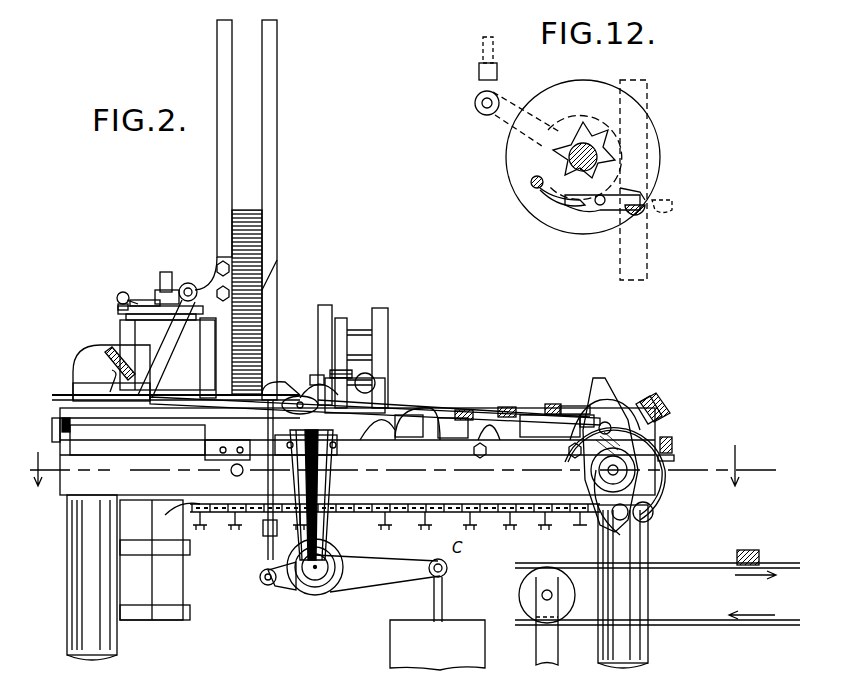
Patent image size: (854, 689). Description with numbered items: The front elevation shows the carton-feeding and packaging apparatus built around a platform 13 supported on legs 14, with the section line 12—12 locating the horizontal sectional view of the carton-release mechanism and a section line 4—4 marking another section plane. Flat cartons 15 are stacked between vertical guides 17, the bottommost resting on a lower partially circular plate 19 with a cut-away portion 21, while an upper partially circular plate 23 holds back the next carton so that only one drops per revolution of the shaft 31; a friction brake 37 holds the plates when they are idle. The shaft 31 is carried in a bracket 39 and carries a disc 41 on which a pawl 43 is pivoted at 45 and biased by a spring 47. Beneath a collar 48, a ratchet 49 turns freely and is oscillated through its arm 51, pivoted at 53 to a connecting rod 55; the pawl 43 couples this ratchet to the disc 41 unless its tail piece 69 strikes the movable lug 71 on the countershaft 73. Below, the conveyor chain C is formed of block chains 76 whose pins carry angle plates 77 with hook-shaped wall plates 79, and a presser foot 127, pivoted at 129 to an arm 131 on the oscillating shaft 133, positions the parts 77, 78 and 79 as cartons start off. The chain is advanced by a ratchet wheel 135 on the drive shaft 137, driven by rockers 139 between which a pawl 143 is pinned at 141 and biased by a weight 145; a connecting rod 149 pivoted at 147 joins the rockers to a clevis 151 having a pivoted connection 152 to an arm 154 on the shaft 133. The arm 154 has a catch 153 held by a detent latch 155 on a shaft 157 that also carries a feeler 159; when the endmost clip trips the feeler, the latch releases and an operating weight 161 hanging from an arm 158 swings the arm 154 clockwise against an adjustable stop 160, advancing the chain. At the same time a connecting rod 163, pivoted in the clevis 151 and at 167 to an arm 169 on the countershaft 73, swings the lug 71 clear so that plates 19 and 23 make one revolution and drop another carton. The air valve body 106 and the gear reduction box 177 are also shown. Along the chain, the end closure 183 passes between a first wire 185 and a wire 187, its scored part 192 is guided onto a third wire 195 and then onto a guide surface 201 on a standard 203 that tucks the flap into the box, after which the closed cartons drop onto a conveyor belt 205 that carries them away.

In FIG. 2, the section line 4- 4 is at (399, 465).
In FIG. 2, the section line 12— 12 is at (180, 300).
In FIG. 2, the platform 13 is at (62, 438).
In FIG. 2, the legs 14 is at (105, 640).
In FIG. 2, the cartons 15 is at (240, 232).
In FIG. 2, the vertical guides 17 is at (265, 153).
In FIG. 2, the lower partially circular plate 19 is at (107, 375).
In FIG. 2, the cut-away portion 21 is at (70, 398).
In FIG. 2, the upper partially circular plate 23 is at (70, 393).
In FIG. 2, the shaft 31 is at (164, 272).
In FIG. 12, the shaft 31 is at (584, 142).
In FIG. 2, the friction brake 37 is at (84, 382).
In FIG. 2, the bracket 39 is at (88, 352).
In FIG. 2, the disc 41 is at (159, 319).
In FIG. 12, the disc 41 is at (512, 162).
In FIG. 2, the pawl 43 is at (170, 316).
In FIG. 12, the pawl 43 is at (590, 205).
In FIG. 12, the pivot 45 is at (603, 208).
In FIG. 2, the spring 47 is at (146, 300).
In FIG. 12, the spring 47 is at (555, 190).
In FIG. 2, the collar 48 is at (157, 292).
In FIG. 12, the ratchet 49 is at (570, 135).
In FIG. 2, the arm 51 is at (118, 295).
In FIG. 12, the arm 51 is at (498, 125).
In FIG. 2, the pivot 53 is at (123, 292).
In FIG. 12, the pivot 53 is at (475, 103).
In FIG. 12, the connecting rod 55 is at (480, 53).
In FIG. 12, the tail piece 69 is at (640, 190).
In FIG. 12, the movable lug 71 is at (675, 200).
In FIG. 2, the countershaft 73 is at (188, 283).
In FIG. 12, the countershaft 73 is at (645, 265).
In FIG. 2, the block chains 76 is at (650, 486).
In FIG. 2, the angle plates 77 is at (238, 530).
In FIG. 2, the plate part 78 is at (210, 532).
In FIG. 2, the hook-shaped wall plates 79 is at (230, 520).
In FIG. 2, the valve body 106 is at (98, 428).
In FIG. 2, the presser foot 127 is at (270, 283).
In FIG. 2, the pivot 129 is at (262, 585).
In FIG. 2, the arm 131 is at (284, 590).
In FIG. 2, the oscillating shaft 133 is at (318, 580).
In FIG. 2, the ratchet wheel 135 is at (664, 412).
In FIG. 2, the drive shaft 137 is at (592, 474).
In FIG. 2, the rockers 139 is at (601, 398).
In FIG. 2, the pin 141 is at (630, 525).
In FIG. 2, the pawl 143 is at (600, 522).
In FIG. 2, the weight 145 is at (653, 514).
In FIG. 2, the pivot 147 is at (612, 420).
In FIG. 2, the connecting rod 149 is at (586, 415).
In FIG. 2, the clevis 151 is at (290, 403).
In FIG. 2, the pivoted connection 152 is at (318, 375).
In FIG. 2, the catch 153 is at (320, 380).
In FIG. 2, the arm 154 is at (330, 482).
In FIG. 2, the detent latch 155 is at (318, 374).
In FIG. 2, the shaft 157 is at (372, 378).
In FIG. 2, the connecting rod 158 is at (368, 575).
In FIG. 2, the feeler 159 is at (378, 392).
In FIG. 2, the adjustable stop 160 is at (380, 445).
In FIG. 2, the operating weight 161 is at (432, 664).
In FIG. 2, the connecting rod 163 is at (205, 420).
In FIG. 2, the pivot 167 is at (135, 440).
In FIG. 2, the arm 169 is at (160, 365).
In FIG. 2, the gear reduction box 177 is at (165, 615).
In FIG. 2, the end closure 183 is at (482, 408).
In FIG. 2, the first wire 185 is at (380, 402).
In FIG. 2, the wire 187 is at (395, 412).
In FIG. 2, the scored part 192 is at (520, 430).
In FIG. 2, the third wire 195 is at (472, 450).
In FIG. 2, the guide surface 201 is at (560, 407).
In FIG. 2, the standard 203 is at (545, 450).
In FIG. 2, the conveyor belt 205 is at (692, 617).